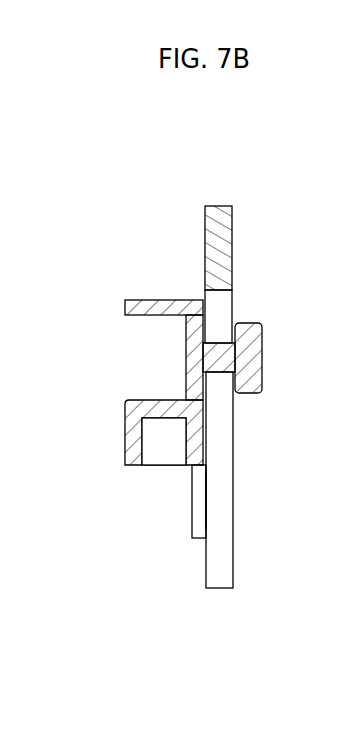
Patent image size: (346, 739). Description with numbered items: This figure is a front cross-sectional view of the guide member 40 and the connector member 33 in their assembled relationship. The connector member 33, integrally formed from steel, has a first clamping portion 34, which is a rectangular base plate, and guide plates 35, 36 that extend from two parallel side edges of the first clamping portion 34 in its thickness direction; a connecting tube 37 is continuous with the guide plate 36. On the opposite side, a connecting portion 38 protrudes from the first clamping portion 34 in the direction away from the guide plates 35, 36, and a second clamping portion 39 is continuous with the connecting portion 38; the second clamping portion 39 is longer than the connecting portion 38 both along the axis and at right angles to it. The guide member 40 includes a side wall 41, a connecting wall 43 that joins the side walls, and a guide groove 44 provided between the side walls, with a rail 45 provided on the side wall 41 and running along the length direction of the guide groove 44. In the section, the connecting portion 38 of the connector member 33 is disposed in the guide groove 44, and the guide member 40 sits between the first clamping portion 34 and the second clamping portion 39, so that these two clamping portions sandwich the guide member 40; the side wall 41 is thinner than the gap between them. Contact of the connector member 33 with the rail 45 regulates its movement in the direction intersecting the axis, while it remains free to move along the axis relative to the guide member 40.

The connector member 33 is at (125, 381).
The first clamping portion 34 is at (192, 358).
The guide plate 35 is at (163, 303).
The guide plate 36 is at (150, 412).
The connecting tube 37 is at (125, 465).
The connecting portion 38 is at (233, 395).
The second clamping portion 39 is at (250, 340).
The guide member 40 is at (251, 236).
The side wall 41 is at (218, 545).
The connecting wall 43 is at (216, 230).
The guide groove 44 is at (218, 490).
The rail 45 is at (200, 526).